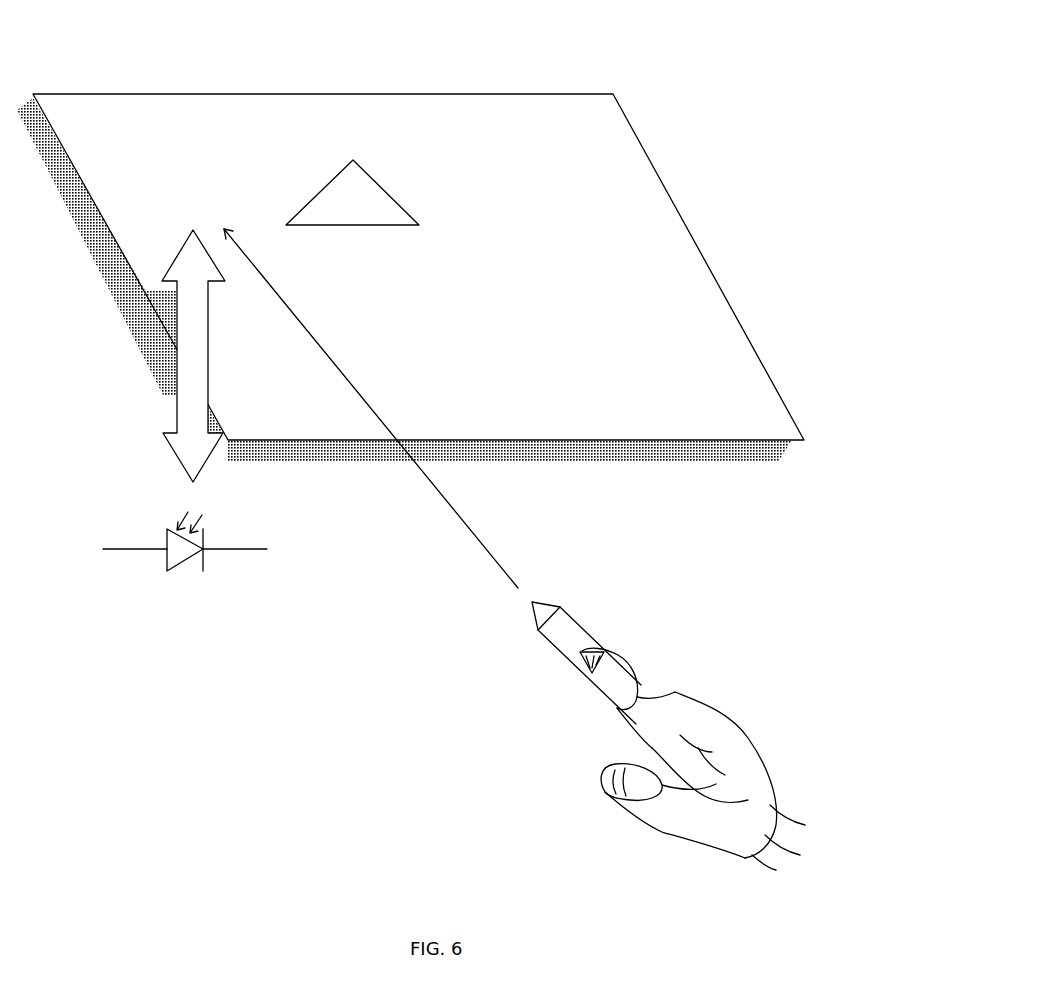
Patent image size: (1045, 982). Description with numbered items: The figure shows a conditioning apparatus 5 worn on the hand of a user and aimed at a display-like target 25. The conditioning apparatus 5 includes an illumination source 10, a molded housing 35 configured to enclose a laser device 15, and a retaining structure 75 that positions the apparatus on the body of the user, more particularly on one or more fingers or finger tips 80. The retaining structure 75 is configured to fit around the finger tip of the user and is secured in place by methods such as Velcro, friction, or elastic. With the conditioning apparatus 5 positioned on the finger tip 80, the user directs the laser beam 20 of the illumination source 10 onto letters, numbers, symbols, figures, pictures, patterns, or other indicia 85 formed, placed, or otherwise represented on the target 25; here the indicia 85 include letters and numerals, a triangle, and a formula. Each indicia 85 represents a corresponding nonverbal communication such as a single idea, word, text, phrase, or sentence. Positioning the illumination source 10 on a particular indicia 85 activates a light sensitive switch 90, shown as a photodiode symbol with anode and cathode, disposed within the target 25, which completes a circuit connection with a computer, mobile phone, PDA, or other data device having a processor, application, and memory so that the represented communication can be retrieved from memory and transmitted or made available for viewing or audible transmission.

The conditioning apparatus 5 is at (310, 685).
The illumination source 10 is at (569, 634).
The laser device 15 is at (548, 596).
The laser beam 20 is at (375, 400).
The target 25 is at (670, 100).
The molded housing 35 is at (565, 645).
The retaining structure 75 is at (584, 665).
The finger tip 80 is at (683, 759).
The indicia 85 is at (247, 162).
The light sensitive switch 90 is at (195, 578).